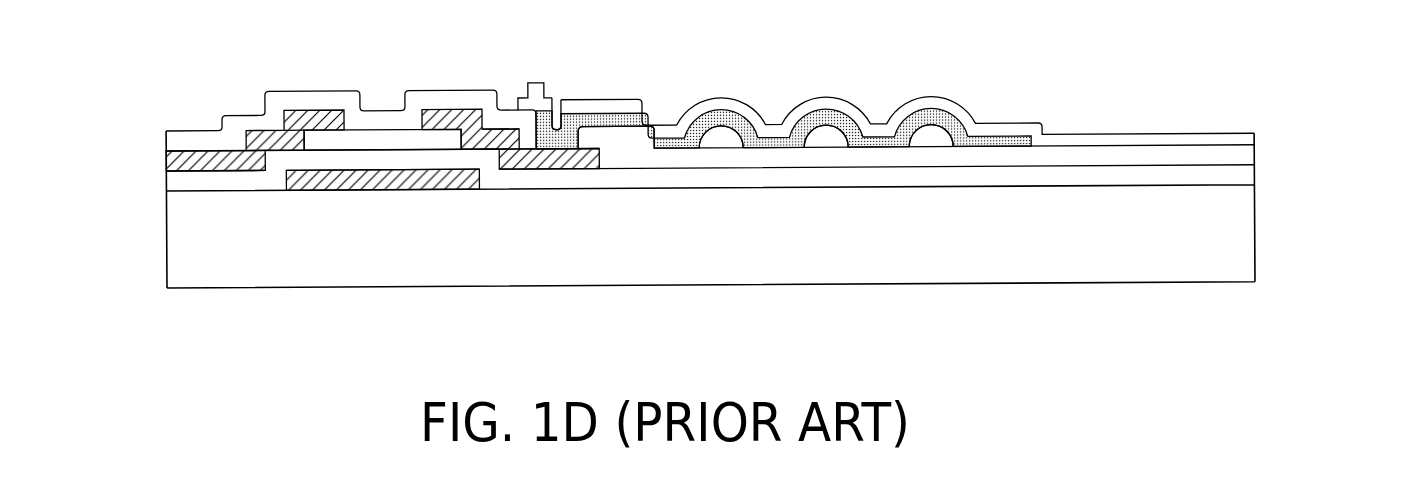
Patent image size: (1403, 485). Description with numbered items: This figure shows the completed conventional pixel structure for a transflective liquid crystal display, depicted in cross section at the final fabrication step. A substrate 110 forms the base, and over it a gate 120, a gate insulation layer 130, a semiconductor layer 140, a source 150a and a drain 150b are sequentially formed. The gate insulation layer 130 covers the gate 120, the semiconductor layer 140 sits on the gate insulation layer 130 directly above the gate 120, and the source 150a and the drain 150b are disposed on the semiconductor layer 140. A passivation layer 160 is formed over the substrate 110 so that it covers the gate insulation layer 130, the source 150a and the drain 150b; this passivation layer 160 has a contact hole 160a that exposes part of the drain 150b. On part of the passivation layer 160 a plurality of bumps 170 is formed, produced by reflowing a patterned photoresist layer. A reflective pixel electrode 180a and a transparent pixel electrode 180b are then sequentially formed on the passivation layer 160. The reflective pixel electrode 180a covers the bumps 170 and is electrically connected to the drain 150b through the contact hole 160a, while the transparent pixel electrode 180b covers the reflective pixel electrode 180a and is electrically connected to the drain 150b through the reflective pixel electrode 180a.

The substrate 110 is at (1249, 250).
The gate 120 is at (413, 184).
The gate insulation layer 130 is at (1249, 181).
The semiconductor layer 140 is at (358, 131).
The source 150a is at (330, 118).
The drain 150b is at (440, 120).
The passivation layer 160 is at (1249, 157).
The contact hole 160a is at (558, 130).
The bumps 170 is at (725, 146).
The reflective pixel electrode 180a is at (997, 148).
The transparent pixel electrode 180b is at (1256, 144).